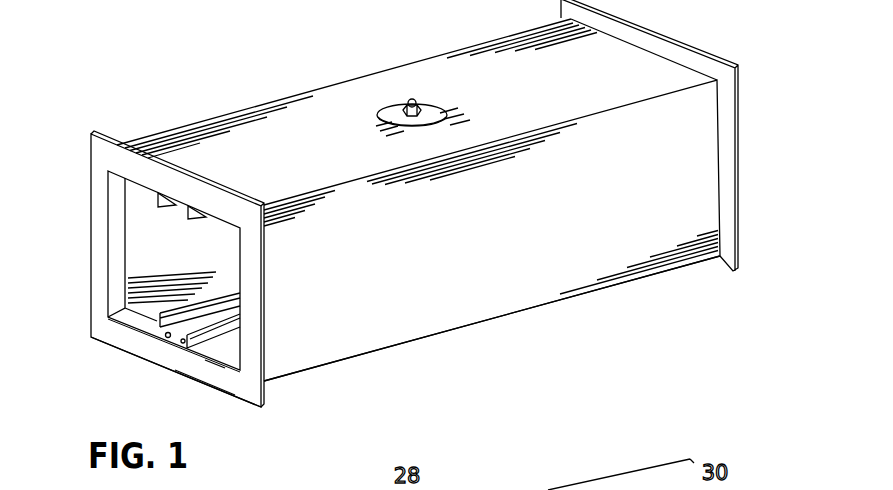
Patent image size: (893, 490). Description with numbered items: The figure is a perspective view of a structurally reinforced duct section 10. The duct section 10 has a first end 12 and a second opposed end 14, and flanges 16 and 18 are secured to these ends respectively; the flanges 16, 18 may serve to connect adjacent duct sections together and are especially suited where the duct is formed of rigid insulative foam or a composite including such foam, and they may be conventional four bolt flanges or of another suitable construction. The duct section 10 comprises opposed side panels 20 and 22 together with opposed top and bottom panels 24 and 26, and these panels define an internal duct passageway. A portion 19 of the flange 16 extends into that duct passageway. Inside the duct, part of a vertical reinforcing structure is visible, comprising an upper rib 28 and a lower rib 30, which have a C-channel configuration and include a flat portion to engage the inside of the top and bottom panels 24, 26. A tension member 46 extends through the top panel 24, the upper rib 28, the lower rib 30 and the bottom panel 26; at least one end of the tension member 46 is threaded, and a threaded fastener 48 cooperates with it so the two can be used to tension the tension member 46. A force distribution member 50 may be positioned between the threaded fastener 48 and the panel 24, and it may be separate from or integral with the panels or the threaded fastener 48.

The duct section 10 is at (536, 318).
The first end 12 is at (121, 362).
The second opposed end 14 is at (758, 216).
The flange 16 is at (198, 367).
The flange 18 is at (739, 127).
The portion of the flange 19 is at (225, 362).
The side panel 20 is at (380, 333).
The side panel 22 is at (136, 232).
The top panel 24 is at (505, 70).
The bottom panel 26 is at (90, 337).
The upper rib 28 is at (198, 220).
The lower rib 30 is at (229, 329).
The tension member 46 is at (411, 100).
The threaded fastener 48 is at (402, 112).
The force distribution member 50 is at (432, 118).